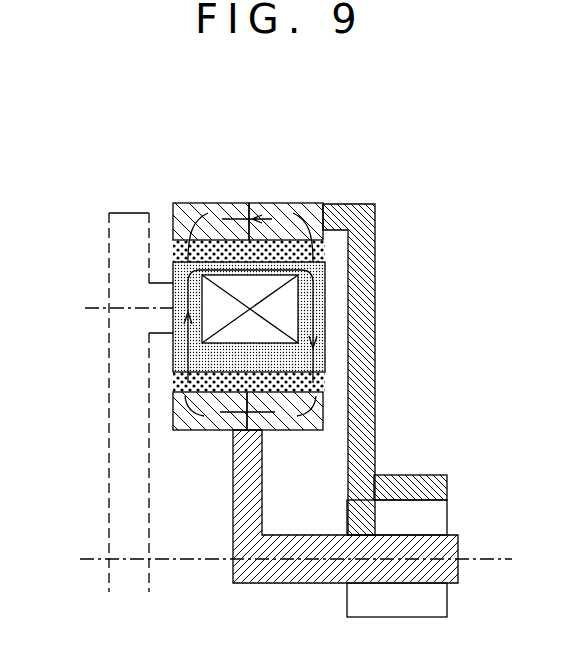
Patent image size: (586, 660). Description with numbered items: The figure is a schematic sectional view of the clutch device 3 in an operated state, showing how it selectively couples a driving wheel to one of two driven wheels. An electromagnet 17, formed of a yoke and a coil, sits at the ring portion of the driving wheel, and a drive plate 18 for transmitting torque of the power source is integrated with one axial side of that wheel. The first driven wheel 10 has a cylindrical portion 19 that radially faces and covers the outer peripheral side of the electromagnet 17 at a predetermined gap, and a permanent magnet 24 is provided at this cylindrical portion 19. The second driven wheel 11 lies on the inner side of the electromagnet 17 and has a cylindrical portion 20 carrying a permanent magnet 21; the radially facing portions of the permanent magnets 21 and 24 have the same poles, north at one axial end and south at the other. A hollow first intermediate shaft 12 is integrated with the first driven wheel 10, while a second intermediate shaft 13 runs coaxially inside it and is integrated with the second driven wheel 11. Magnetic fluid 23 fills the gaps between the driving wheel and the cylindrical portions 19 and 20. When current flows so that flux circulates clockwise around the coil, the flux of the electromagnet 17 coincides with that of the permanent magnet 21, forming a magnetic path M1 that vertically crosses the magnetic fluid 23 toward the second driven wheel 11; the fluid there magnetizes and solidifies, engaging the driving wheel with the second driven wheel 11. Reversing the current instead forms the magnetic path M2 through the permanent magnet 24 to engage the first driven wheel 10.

The clutch device 3 is at (357, 170).
The first driven wheel 10 is at (380, 211).
The second driven wheel 11 is at (229, 455).
The first intermediate shaft 12 is at (446, 474).
The second intermediate shaft 13 is at (459, 545).
The electromagnet 17 is at (290, 316).
The drive plate 18 is at (130, 212).
The cylindrical portion 19 is at (283, 200).
The cylindrical portion 20 is at (294, 436).
The permanent magnet 21 is at (175, 426).
The magnetic fluid 23 is at (175, 243).
The permanent magnet 24 is at (222, 203).
The magnetic path M1 is at (325, 375).
The magnetic path M2 is at (312, 240).